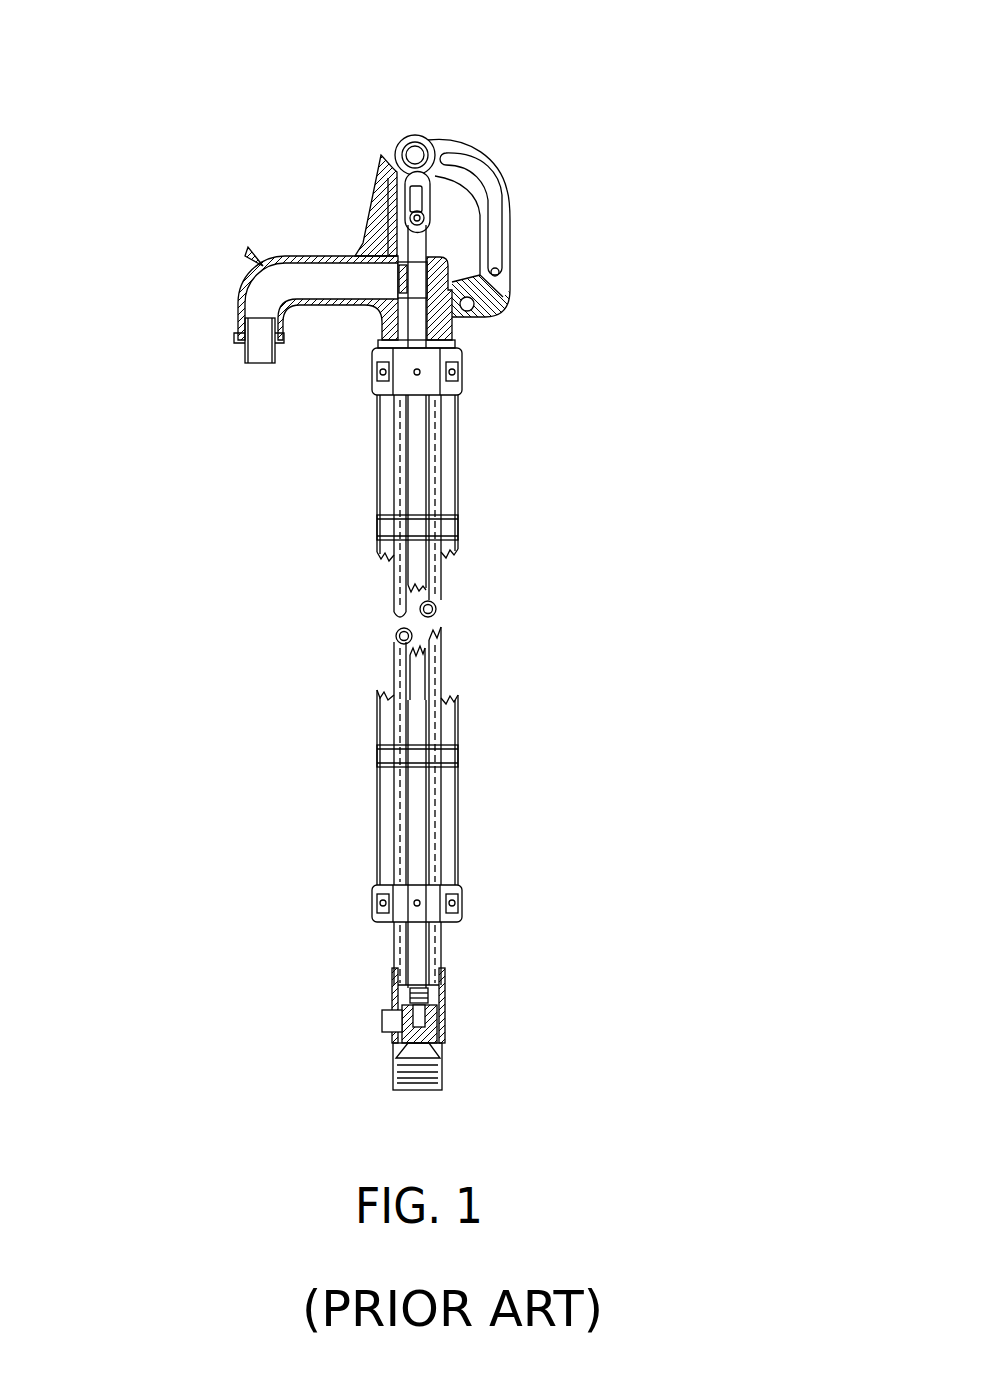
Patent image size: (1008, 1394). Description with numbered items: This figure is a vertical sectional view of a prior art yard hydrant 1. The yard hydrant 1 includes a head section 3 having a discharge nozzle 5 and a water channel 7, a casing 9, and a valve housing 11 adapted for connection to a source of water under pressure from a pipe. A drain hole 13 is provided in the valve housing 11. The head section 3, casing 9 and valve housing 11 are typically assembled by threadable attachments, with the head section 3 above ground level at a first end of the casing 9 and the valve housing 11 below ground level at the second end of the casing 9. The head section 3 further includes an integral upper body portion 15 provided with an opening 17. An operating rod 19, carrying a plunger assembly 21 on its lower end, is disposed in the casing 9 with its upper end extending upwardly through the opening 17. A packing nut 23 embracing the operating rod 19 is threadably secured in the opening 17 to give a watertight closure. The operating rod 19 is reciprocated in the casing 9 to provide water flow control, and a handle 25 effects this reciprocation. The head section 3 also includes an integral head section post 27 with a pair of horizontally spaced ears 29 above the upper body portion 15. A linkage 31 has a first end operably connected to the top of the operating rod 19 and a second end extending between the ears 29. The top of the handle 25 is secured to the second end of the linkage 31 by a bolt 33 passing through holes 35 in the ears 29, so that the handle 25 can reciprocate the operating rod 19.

The yard hydrant 1 is at (760, 101).
The head section 3 is at (327, 305).
The discharge nozzle 5 is at (235, 335).
The water channel 7 is at (315, 283).
The casing 9 is at (437, 663).
The valve housing 11 is at (440, 1053).
The drain hole 13 is at (382, 1028).
The integral upper body portion 15 is at (440, 275).
The opening 17 is at (432, 250).
The operating rod 19 is at (417, 333).
The plunger assembly 21 is at (441, 1020).
The packing nut 23 is at (433, 214).
The handle 25 is at (507, 190).
The head section post 27 is at (372, 198).
The ears 29 is at (418, 140).
The linkage 31 is at (493, 172).
The bolt 33 is at (411, 140).
The holes 35 is at (413, 150).